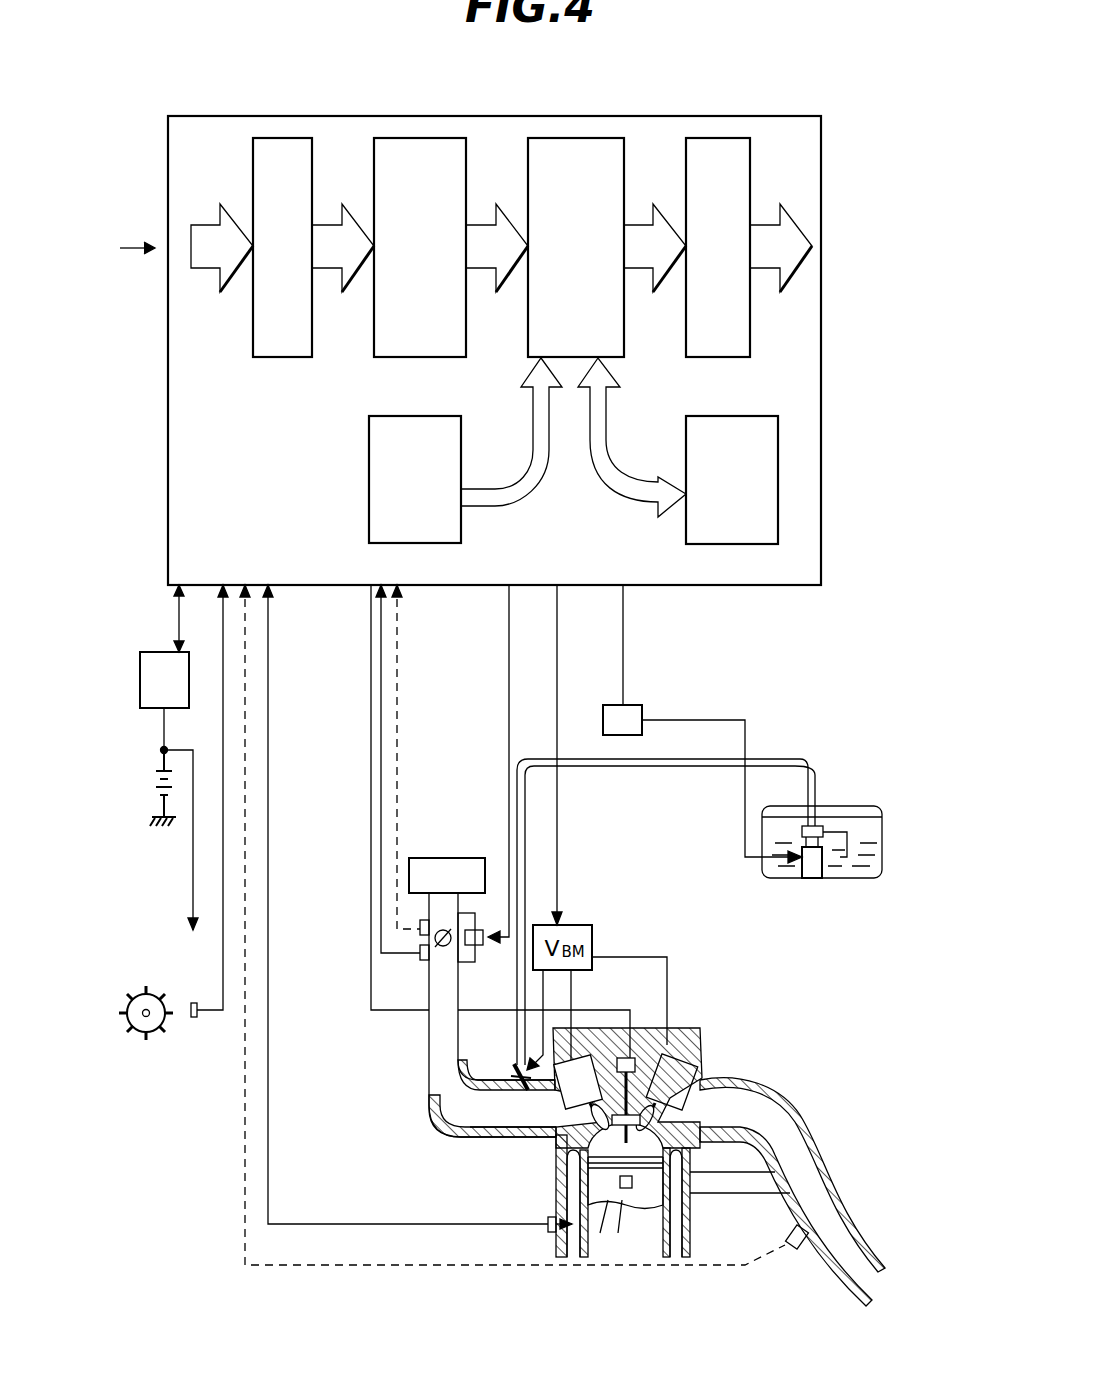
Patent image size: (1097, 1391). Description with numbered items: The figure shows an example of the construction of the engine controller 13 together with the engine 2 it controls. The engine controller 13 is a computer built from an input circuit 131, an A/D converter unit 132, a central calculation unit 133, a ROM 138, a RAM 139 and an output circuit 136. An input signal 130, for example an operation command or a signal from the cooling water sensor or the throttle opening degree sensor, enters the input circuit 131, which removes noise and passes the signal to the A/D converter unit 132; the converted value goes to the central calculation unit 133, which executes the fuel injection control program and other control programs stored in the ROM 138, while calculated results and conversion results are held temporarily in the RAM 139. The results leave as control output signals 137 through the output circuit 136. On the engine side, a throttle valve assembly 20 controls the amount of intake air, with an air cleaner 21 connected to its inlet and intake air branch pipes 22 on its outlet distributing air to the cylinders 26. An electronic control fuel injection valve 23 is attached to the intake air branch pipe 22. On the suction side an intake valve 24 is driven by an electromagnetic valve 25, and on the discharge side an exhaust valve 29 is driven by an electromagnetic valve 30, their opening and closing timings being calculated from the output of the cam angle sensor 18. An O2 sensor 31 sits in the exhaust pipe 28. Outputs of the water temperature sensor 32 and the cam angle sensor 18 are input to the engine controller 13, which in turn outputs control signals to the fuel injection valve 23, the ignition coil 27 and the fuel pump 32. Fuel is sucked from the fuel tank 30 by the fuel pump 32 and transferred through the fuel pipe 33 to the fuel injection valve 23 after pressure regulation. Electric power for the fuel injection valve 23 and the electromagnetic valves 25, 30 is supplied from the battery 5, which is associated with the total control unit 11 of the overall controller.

The engine 2 is at (675, 1114).
The battery 5 is at (158, 784).
The total control unit 11 is at (152, 710).
The engine controller 13 is at (805, 553).
The cam angle sensor 18 is at (137, 1035).
The throttle valve assembly 20 is at (438, 965).
The air cleaner 21 is at (440, 870).
The intake air branch pipe 22 is at (433, 1072).
The electronic control fuel injection valve 23 is at (520, 1064).
The intake valve 24 is at (531, 1146).
The electromagnetic valve 25 is at (570, 1083).
The cylinder 26 is at (553, 1188).
The ignition coil 27 is at (632, 1050).
The exhaust pipe 28 is at (820, 1190).
The exhaust valve 29 is at (738, 1103).
The electromagnetic valve / fuel tank 30 is at (870, 833).
The O2 sensor 31 is at (640, 712).
The water temperature sensor / fuel pump 32 is at (823, 826).
The fuel pipe 33 is at (712, 767).
The input signal 130 is at (208, 232).
The input circuit 131 is at (284, 138).
The A/D converter unit 132 is at (420, 138).
The central calculation unit 133 is at (577, 138).
The output circuit 136 is at (726, 138).
The control output signals 137 is at (800, 224).
The ROM 138 is at (369, 466).
The RAM 139 is at (726, 416).